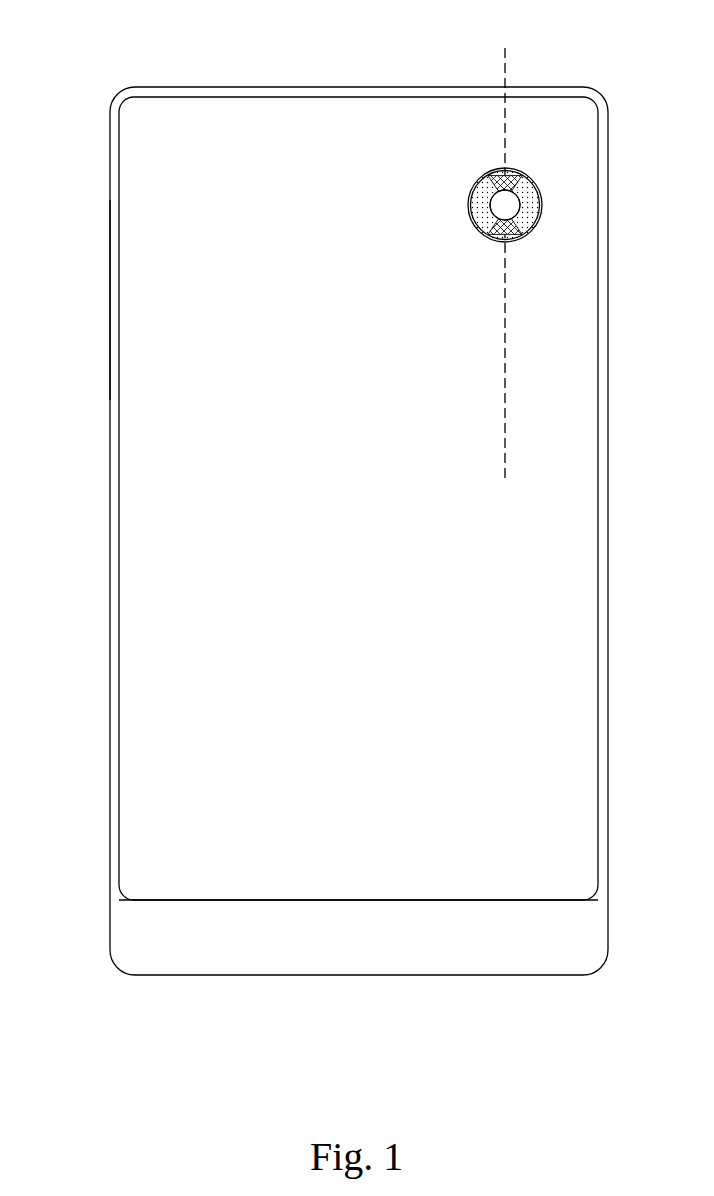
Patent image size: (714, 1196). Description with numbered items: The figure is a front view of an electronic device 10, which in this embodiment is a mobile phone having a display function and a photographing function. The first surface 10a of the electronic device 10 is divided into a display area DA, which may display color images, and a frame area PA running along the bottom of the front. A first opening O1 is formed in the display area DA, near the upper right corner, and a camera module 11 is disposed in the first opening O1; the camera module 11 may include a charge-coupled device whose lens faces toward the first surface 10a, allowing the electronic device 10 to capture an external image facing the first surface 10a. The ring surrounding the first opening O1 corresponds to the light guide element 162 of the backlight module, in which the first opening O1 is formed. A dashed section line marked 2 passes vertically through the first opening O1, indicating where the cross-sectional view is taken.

The electronic device 10 is at (48, 33).
The first surface 10a is at (137, 283).
The section line 2 is at (506, 48).
The light guide element 162 is at (541, 195).
The camera module 11 is at (515, 210).
The first opening O1 is at (500, 170).
The display area DA is at (195, 883).
The frame area PA is at (193, 965).